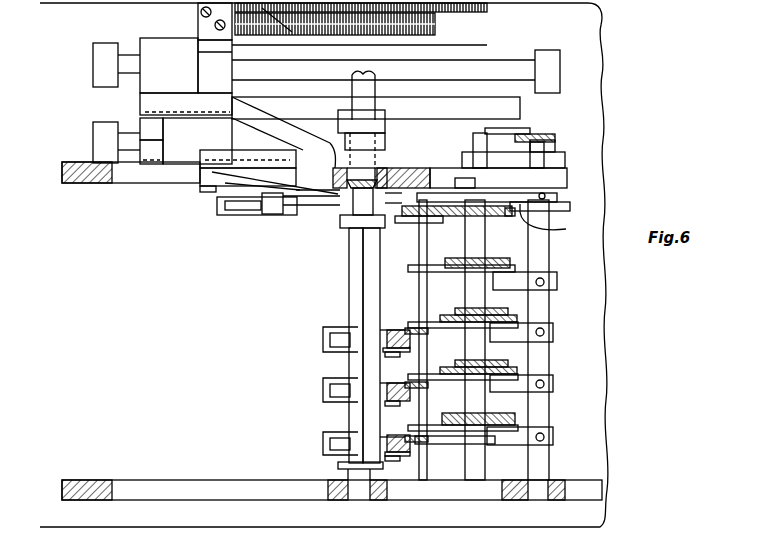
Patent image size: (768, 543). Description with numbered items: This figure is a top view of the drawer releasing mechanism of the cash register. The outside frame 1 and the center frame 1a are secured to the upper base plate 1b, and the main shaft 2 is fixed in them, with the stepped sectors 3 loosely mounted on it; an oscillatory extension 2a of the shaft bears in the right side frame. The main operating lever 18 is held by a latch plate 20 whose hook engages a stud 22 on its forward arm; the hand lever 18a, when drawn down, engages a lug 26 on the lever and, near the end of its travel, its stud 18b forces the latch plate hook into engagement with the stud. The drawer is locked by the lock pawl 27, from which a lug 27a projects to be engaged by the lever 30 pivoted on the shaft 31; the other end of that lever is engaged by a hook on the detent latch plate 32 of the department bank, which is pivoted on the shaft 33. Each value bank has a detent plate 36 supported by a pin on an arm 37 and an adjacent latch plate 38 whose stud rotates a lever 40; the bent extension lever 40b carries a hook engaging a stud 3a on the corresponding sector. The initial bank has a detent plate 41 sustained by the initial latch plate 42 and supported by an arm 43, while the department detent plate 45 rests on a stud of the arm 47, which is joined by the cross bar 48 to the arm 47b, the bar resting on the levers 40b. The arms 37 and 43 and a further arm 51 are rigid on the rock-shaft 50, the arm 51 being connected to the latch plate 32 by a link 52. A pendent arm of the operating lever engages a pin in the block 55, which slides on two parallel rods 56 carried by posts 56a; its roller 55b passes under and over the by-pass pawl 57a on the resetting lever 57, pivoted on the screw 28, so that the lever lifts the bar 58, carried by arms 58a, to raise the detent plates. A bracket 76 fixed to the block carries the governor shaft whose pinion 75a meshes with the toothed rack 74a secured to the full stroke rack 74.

The outside frame 1 is at (178, 480).
The center frame 1a is at (124, 180).
The upper base plate 1b is at (168, 376).
The main shaft 2 is at (307, 202).
The oscillatory extension of shaft 2 2a is at (375, 105).
The stepped sector 3 is at (397, 395).
The stud 3a is at (395, 352).
The main operating lever 18 is at (360, 174).
The hand lever 18a is at (548, 134).
The stud 18b is at (246, 104).
The latch plate 20 is at (563, 164).
The stud 22 is at (510, 173).
The lug 26 is at (518, 130).
The lock pawl 27 is at (242, 213).
The lug 27a is at (273, 213).
The screw 28 is at (343, 187).
The lever 30 is at (330, 192).
The shaft 31 is at (350, 284).
The detent latch plate 32 is at (508, 216).
The shaft 33 is at (471, 286).
The detent plate 36 is at (478, 366).
The arm 37 is at (498, 326).
The latch plate 38 is at (493, 312).
The lever 40 is at (391, 326).
The lever 40b is at (392, 466).
The detent plate 41 is at (456, 266).
The initial latch plate 42 is at (460, 262).
The arm 43 is at (497, 272).
The detent plate 45 is at (462, 216).
The arm 47 is at (406, 223).
The arm 47b is at (340, 458).
The cross bar 48 is at (373, 303).
The rock-shaft 50 is at (551, 350).
The arm 51 is at (558, 207).
The link 52 is at (550, 220).
The block 55 is at (186, 65).
The roller 55b is at (162, 156).
The rod 56 is at (326, 99).
The post 56a is at (576, 141).
The resetting lever 57 is at (215, 184).
The by-pass pawl 57a is at (248, 156).
The bar 58 is at (419, 284).
The arm 58a is at (465, 186).
The full stroke rack 74 is at (372, 30).
The toothed rack 74a is at (463, 16).
The pinion 75a is at (278, 30).
The bracket 76 is at (200, 22).